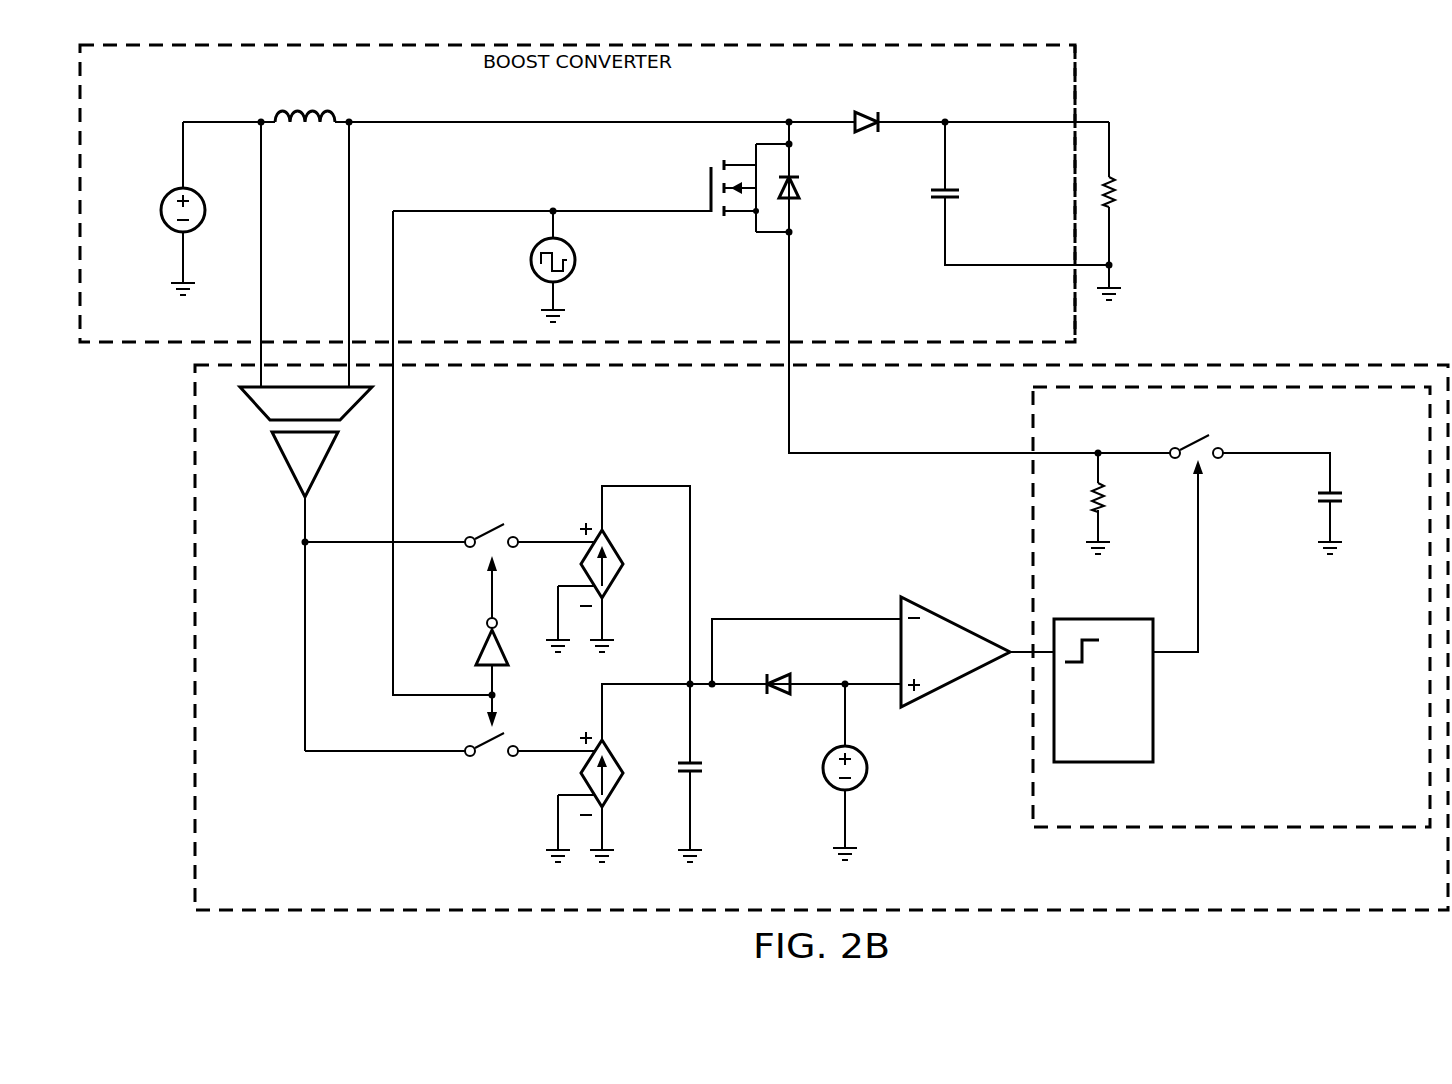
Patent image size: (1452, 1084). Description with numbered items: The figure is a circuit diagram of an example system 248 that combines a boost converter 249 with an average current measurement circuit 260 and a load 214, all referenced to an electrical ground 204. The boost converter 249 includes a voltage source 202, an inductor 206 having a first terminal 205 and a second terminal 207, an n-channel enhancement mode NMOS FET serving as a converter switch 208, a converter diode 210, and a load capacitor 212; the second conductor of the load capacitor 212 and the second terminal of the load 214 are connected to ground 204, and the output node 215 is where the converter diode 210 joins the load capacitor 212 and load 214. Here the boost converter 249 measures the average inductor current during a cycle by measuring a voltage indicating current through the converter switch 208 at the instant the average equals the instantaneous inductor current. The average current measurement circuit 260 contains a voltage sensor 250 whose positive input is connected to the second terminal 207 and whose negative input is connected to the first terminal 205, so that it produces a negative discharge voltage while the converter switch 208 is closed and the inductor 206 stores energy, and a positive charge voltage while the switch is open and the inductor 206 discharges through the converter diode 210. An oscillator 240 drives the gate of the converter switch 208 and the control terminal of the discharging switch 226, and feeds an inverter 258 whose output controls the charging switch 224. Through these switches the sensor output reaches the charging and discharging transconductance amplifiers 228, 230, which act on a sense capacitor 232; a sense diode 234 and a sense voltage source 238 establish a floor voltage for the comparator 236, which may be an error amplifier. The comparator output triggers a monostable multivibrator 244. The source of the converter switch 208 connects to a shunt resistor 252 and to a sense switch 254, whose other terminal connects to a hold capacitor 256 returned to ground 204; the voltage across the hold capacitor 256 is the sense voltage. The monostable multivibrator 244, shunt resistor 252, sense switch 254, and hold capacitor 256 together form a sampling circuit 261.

The voltage source 202 is at (160, 210).
The electrical ground 204 is at (172, 293).
The first terminal of the inductor 205 is at (258, 127).
The inductor 206 is at (293, 112).
The second terminal of the inductor 207 is at (353, 127).
The converter switch 208 is at (826, 182).
The converter diode 210 is at (868, 112).
The load capacitor 212 is at (958, 196).
The load 214 is at (1117, 190).
The output node 215 is at (950, 128).
The charging switch 224 is at (467, 533).
The discharging switch 226 is at (486, 760).
The charging transconductance amplifier 228 is at (612, 588).
The discharging transconductance amplifier 230 is at (612, 797).
The sense capacitor 232 is at (702, 766).
The sense diode 234 is at (775, 695).
The comparator 236 is at (956, 680).
The sense voltage source 238 is at (868, 770).
The oscillator 240 is at (531, 258).
The monostable multivibrator 244 is at (1100, 765).
The system 248 is at (1334, 80).
The boost converter 249 is at (1085, 102).
The voltage sensor 250 is at (255, 446).
The shunt resistor 252 is at (1106, 496).
The sense switch 254 is at (1203, 442).
The hold capacitor 256 is at (1342, 497).
The inverter 258 is at (475, 648).
The average current measurement circuit 260 is at (182, 748).
The sampling circuit 261 is at (1297, 840).